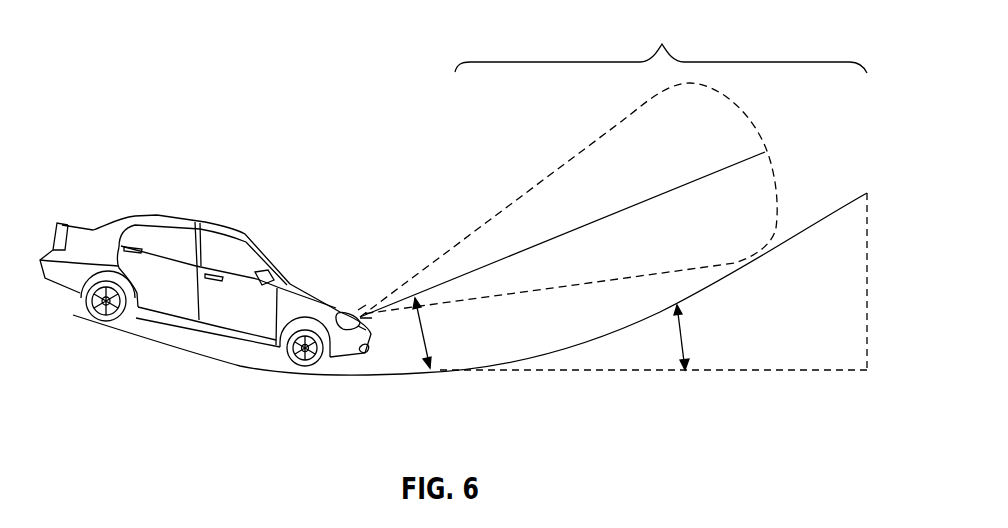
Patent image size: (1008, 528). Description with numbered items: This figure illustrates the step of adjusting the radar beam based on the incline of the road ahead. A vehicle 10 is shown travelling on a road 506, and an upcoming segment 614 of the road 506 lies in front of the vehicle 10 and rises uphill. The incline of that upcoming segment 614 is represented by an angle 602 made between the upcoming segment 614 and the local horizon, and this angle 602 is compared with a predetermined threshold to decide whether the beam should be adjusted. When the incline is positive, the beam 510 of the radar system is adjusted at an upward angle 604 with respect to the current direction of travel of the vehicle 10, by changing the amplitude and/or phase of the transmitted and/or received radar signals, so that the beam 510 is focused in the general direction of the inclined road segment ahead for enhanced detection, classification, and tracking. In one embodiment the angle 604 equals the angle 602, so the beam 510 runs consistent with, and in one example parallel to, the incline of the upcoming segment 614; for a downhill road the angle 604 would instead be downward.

The vehicle 10 is at (142, 215).
The road 506 is at (126, 338).
The beam 510 is at (570, 160).
The angle 602 is at (684, 341).
The angle 604 is at (430, 341).
The upcoming segment 614 is at (661, 43).